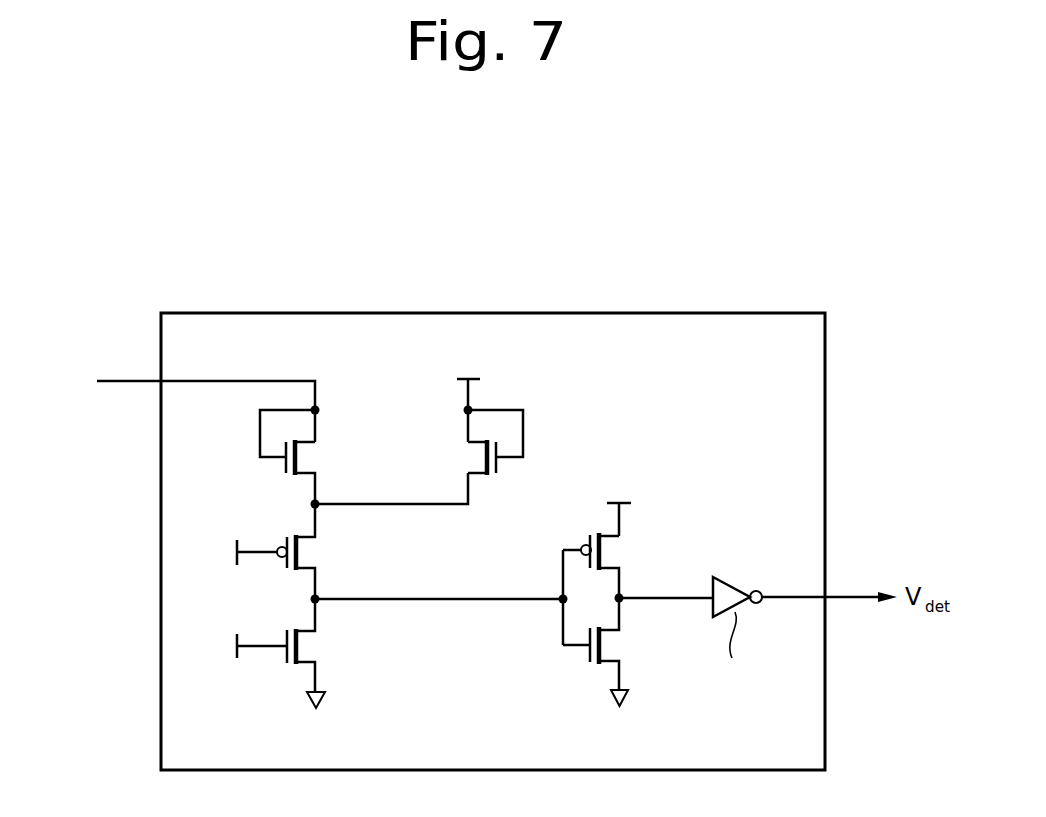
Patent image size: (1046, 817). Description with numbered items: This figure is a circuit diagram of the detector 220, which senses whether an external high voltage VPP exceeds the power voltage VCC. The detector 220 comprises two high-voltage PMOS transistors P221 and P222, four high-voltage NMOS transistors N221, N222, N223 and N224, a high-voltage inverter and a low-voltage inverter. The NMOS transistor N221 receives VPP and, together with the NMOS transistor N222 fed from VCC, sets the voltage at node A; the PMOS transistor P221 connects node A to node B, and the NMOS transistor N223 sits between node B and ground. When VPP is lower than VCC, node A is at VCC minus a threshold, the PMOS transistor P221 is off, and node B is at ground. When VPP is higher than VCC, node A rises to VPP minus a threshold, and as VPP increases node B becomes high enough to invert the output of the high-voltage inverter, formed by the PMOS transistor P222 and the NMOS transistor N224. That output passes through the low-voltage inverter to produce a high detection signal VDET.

The detector 220 is at (693, 305).
The high-voltage NMOS transistor N221 is at (316, 457).
The high-voltage NMOS transistor N222 is at (419, 423).
The high-voltage PMOS transistor P221 is at (281, 551).
The high-voltage PMOS transistor P222 is at (621, 534).
The high-voltage NMOS transistor N223 is at (283, 653).
The high-voltage NMOS transistor N224 is at (621, 652).